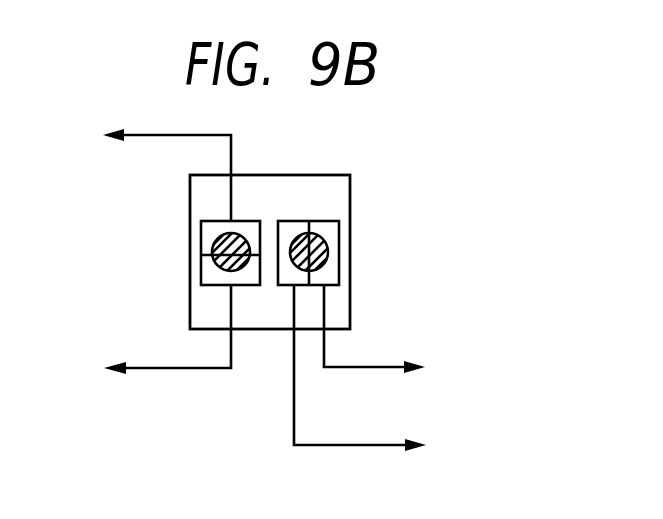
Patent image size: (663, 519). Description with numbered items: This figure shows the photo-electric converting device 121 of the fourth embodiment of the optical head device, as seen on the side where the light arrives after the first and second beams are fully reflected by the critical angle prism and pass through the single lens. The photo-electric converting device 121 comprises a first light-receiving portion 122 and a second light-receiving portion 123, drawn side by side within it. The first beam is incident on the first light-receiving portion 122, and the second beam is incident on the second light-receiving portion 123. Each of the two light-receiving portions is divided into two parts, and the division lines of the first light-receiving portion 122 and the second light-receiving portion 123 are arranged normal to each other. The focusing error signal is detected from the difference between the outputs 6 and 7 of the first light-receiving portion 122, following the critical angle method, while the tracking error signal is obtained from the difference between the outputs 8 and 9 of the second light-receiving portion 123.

The photo-electric converting device 121 is at (350, 191).
The first light-receiving portion 122 is at (346, 241).
The second light-receiving portion 123 is at (201, 255).
The output 6 is at (391, 336).
The output 7 is at (376, 374).
The output 8 is at (152, 168).
The output 9 is at (153, 335).